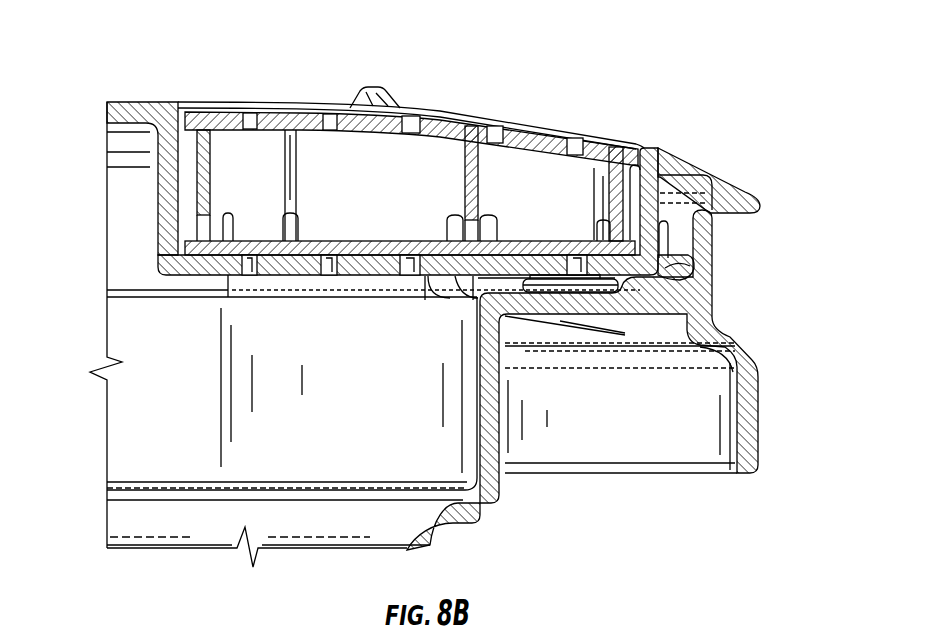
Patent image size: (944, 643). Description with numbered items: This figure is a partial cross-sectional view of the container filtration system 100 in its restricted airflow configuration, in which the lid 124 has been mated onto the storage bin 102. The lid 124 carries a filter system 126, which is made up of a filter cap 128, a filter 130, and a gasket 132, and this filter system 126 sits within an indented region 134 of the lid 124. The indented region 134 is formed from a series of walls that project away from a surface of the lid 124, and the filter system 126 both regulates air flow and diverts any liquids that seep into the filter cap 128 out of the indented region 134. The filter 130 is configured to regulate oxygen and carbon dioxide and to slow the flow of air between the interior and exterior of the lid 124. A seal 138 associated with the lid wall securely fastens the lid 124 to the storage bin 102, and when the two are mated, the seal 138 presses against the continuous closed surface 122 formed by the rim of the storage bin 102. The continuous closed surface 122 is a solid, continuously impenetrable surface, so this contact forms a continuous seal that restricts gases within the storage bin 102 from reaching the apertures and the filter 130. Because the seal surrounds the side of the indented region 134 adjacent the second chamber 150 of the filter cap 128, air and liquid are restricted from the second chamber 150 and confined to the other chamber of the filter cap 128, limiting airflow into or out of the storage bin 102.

The container filtration system 100 is at (703, 82).
The storage bin 102 is at (601, 380).
The continuous closed surface 122 is at (585, 303).
The lid 124 is at (715, 185).
The filter system 126 is at (411, 142).
The filter cap 128 is at (535, 150).
The filter 130 is at (258, 228).
The gasket 132 is at (280, 238).
The indented region 134 is at (163, 209).
The seal 138 is at (662, 277).
The second chamber 150 is at (560, 180).